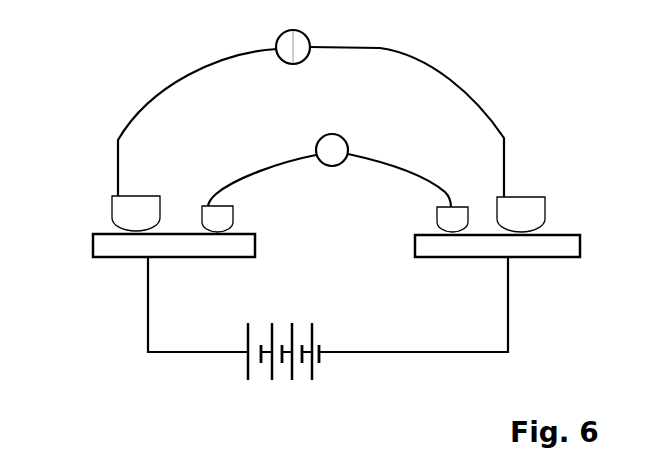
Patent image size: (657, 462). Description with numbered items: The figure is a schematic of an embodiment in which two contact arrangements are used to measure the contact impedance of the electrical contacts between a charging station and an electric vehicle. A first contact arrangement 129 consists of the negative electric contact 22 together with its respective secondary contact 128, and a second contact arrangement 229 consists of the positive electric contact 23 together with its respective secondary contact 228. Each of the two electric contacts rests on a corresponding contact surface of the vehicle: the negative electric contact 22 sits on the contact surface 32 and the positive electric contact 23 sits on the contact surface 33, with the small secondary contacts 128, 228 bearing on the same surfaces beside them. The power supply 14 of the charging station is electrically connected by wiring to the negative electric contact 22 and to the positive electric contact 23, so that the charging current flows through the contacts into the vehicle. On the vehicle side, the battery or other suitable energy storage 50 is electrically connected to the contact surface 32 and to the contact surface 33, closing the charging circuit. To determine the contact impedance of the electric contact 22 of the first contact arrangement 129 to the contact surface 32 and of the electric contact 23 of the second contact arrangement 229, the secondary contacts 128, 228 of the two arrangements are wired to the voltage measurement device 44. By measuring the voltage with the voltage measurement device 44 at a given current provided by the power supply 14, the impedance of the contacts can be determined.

The power supply 14 is at (285, 46).
The voltage measurement device 44 is at (341, 147).
The negative electric contact 22 is at (122, 206).
The positive electric contact 23 is at (534, 208).
The secondary contact 128 is at (225, 218).
The secondary contact 228 is at (443, 220).
The first contact arrangement 129 is at (85, 200).
The second contact arrangement 229 is at (564, 198).
The contact surface 32 is at (115, 243).
The contact surface 33 is at (438, 243).
The energy storage 50 is at (258, 374).